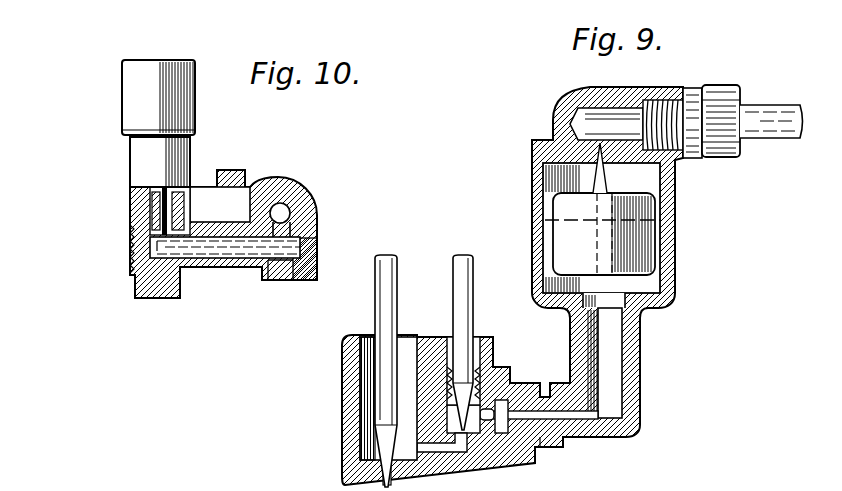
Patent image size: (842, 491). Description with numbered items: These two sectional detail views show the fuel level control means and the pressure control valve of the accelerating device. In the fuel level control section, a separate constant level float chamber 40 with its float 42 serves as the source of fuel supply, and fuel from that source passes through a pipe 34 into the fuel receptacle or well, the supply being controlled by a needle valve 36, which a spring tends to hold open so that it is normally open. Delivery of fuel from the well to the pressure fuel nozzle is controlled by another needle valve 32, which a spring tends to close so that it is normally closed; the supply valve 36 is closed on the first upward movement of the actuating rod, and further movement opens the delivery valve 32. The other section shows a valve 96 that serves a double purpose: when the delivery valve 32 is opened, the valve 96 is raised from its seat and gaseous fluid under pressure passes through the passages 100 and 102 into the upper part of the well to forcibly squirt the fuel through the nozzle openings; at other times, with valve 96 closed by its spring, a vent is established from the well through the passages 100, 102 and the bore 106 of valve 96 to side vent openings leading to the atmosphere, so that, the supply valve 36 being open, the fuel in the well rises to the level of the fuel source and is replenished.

In FIG. 10, the valve 96 is at (150, 192).
In FIG. 10, the bore 106 is at (152, 205).
In FIG. 10, the passage 102 is at (296, 206).
In FIG. 10, the passage 100 is at (242, 258).
In FIG. 9, the needle valve 32 is at (375, 305).
In FIG. 9, the needle valve 36 is at (460, 292).
In FIG. 9, the constant level float chamber 40 is at (668, 236).
In FIG. 9, the float 42 is at (646, 263).
In FIG. 9, the pipe 34 is at (540, 432).